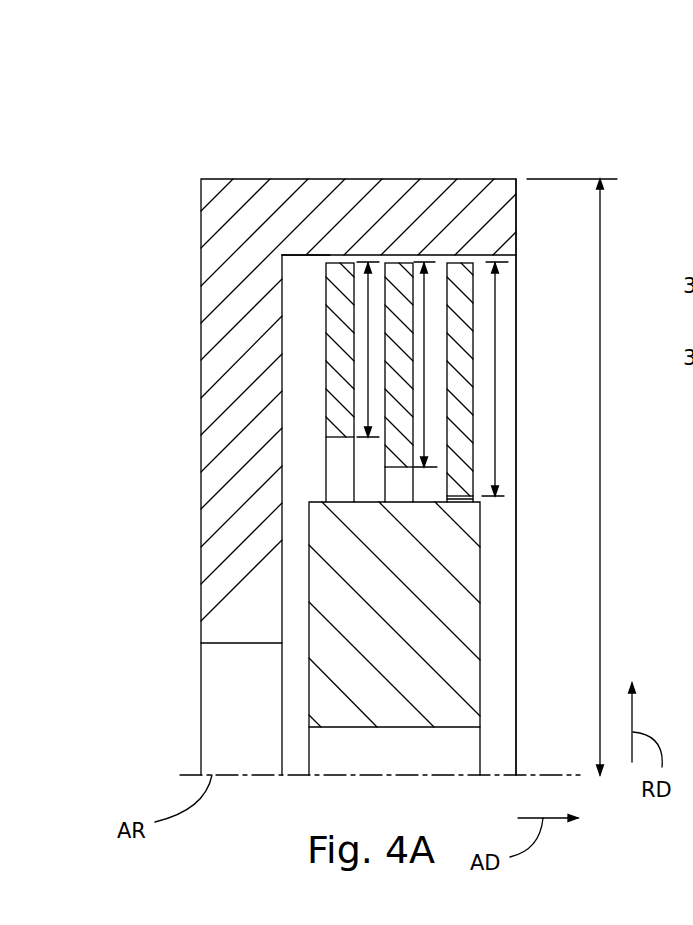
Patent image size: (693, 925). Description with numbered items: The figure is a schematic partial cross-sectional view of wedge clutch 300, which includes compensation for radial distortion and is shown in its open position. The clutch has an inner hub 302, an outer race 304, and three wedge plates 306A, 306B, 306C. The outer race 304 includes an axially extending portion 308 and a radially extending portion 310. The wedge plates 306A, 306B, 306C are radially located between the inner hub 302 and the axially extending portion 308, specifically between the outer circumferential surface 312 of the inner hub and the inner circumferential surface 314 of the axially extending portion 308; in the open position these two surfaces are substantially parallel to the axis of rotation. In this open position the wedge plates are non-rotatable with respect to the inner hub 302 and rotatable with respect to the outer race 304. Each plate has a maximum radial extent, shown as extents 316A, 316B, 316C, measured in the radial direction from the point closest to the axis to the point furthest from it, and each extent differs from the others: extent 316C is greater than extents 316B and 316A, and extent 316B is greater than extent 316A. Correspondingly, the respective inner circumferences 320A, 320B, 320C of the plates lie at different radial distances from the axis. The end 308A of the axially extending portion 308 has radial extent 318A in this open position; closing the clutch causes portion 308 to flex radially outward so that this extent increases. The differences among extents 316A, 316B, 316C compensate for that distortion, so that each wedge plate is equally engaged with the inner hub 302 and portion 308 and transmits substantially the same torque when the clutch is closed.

The wedge clutch 300 is at (150, 200).
The inner hub 302 is at (483, 678).
The outer race 304 is at (253, 176).
The wedge plate 306A is at (327, 345).
The wedge plate 306B is at (385, 385).
The wedge plate 306C is at (474, 354).
The axially extending portion 308 is at (417, 208).
The end 308A is at (518, 212).
The radially extending portion 310 is at (220, 467).
The outer circumferential surface 312 is at (432, 502).
The inner circumferential surface 314 is at (298, 268).
The maximum radial extent 316A is at (366, 312).
The maximum radial extent 316B is at (425, 410).
The maximum radial extent 316C is at (495, 426).
The radial extent 318A is at (602, 570).
The inner circumference 320A is at (340, 440).
The inner circumference 320B is at (402, 468).
The inner circumference 320C is at (463, 500).